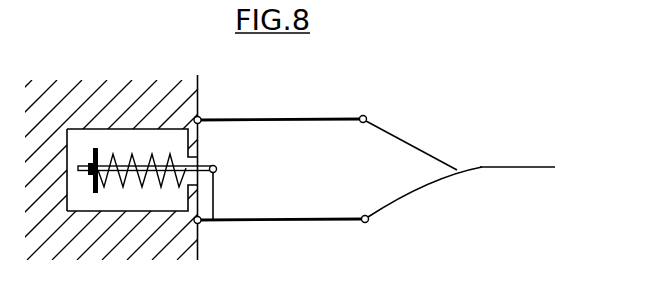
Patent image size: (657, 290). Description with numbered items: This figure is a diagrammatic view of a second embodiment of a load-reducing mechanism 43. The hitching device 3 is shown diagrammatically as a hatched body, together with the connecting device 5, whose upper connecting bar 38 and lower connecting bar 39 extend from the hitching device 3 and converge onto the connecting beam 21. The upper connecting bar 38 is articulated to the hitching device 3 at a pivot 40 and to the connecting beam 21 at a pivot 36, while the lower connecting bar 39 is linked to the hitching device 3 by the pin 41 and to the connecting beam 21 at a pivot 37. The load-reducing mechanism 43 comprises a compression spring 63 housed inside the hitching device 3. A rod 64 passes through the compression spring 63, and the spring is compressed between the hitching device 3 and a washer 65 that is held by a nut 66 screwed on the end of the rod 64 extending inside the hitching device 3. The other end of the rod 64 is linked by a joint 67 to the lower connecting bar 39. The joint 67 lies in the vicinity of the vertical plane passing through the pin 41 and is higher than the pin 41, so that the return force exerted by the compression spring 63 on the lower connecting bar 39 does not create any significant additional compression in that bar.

The hitching device 3 is at (57, 79).
The connecting device 5 is at (540, 150).
The connecting beam 21 is at (488, 168).
The pivot 36 is at (367, 115).
The pivot 37 is at (368, 222).
The upper connecting bar 38 is at (295, 117).
The lower connecting bar 39 is at (318, 217).
The pivot 40 is at (201, 118).
The pin 41 is at (199, 222).
The load-reducing mechanism 43 is at (152, 136).
The compression spring 63 is at (106, 166).
The rod 64 is at (203, 160).
The washer 65 is at (95, 150).
The nut 66 is at (66, 197).
The joint 67 is at (217, 169).